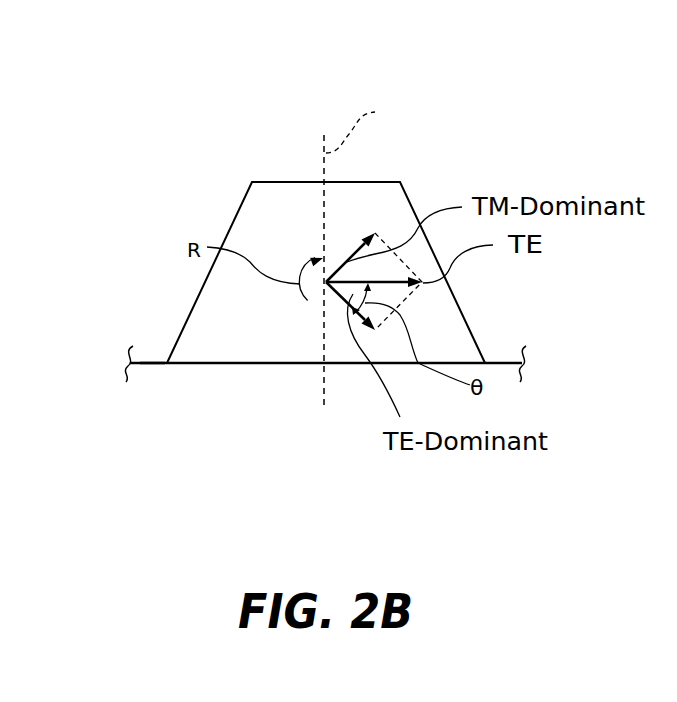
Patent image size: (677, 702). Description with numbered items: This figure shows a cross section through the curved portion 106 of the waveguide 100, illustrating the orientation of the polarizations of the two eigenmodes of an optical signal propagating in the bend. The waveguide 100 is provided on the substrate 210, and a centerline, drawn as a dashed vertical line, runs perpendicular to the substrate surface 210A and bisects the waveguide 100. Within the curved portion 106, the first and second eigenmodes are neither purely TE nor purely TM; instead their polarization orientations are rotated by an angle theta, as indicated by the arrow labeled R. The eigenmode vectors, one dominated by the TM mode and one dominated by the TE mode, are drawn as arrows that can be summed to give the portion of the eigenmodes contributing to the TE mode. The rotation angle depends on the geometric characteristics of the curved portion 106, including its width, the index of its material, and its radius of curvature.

The waveguide 100 is at (119, 81).
The curved portion 106 is at (199, 196).
The substrate 210 is at (287, 415).
The substrate surface 210A is at (150, 362).